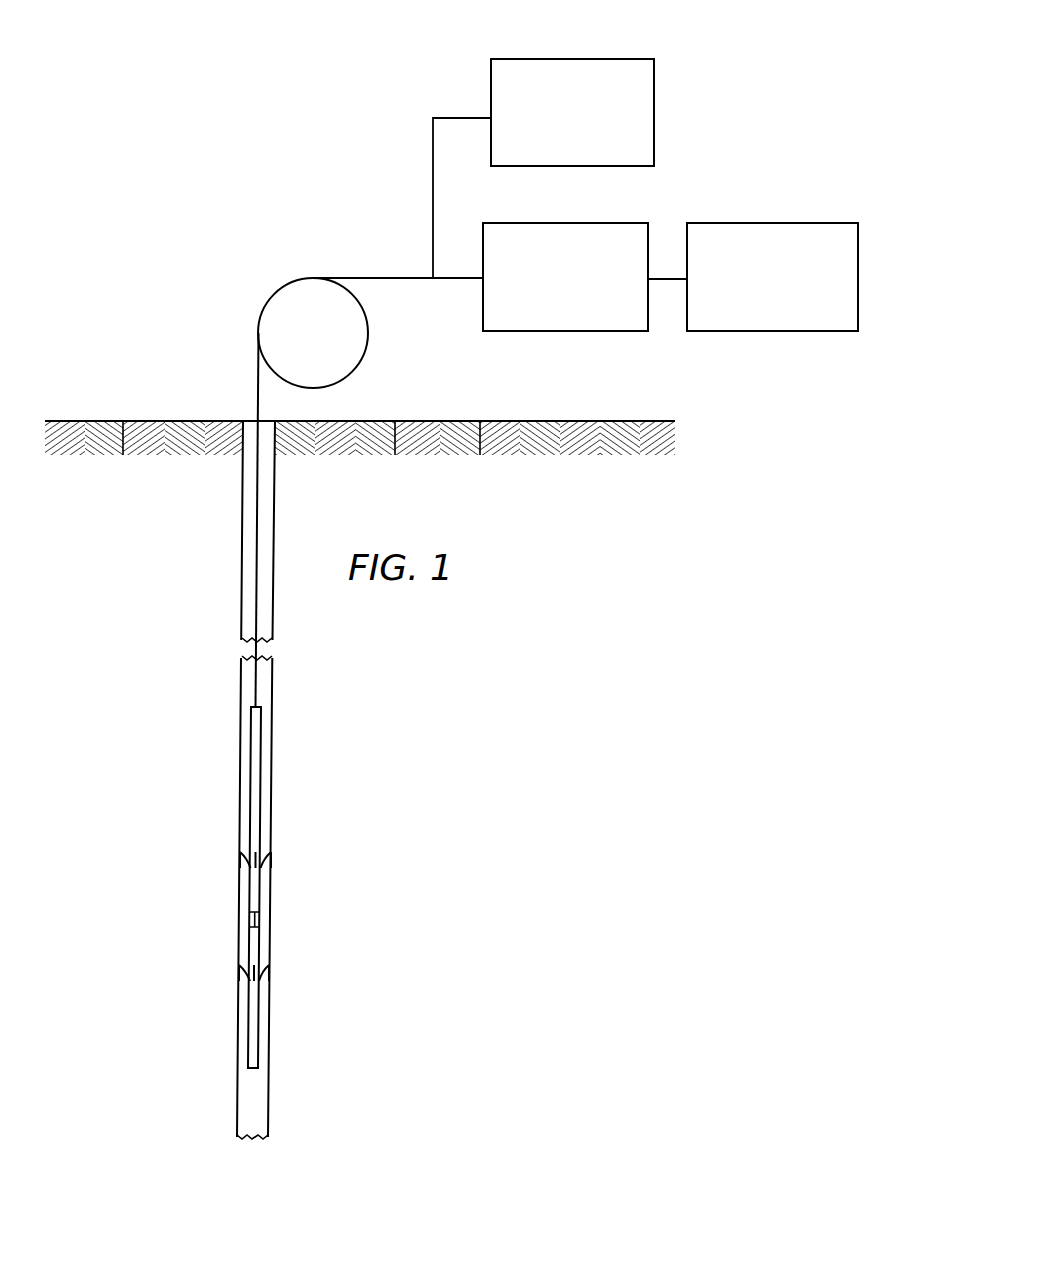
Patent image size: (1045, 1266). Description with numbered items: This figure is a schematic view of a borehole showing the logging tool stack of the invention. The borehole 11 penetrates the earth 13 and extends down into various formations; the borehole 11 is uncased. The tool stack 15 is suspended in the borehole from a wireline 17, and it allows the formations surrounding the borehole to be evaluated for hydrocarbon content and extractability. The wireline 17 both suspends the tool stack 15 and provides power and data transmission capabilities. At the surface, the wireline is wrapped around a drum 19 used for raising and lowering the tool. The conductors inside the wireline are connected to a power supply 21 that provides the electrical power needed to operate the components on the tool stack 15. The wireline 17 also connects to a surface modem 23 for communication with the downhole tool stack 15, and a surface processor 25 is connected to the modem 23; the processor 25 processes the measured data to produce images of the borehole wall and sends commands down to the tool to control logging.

The borehole 11 is at (243, 577).
The earth 13 is at (460, 419).
The tool stack 15 is at (256, 740).
The wireline 17 is at (258, 390).
The drum 19 is at (357, 365).
The power supply 21 is at (609, 60).
The surface modem 23 is at (538, 224).
The surface processor 25 is at (762, 224).